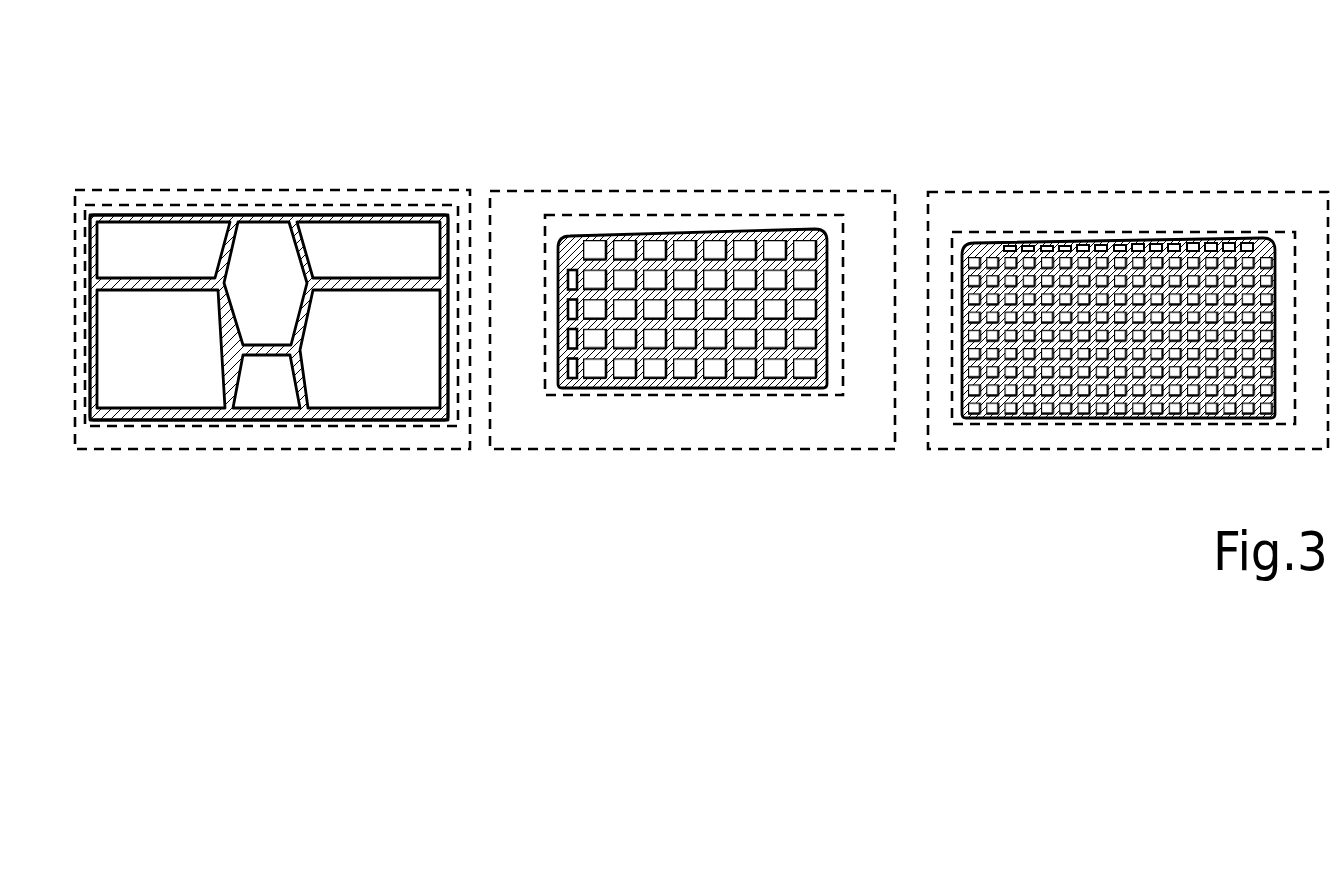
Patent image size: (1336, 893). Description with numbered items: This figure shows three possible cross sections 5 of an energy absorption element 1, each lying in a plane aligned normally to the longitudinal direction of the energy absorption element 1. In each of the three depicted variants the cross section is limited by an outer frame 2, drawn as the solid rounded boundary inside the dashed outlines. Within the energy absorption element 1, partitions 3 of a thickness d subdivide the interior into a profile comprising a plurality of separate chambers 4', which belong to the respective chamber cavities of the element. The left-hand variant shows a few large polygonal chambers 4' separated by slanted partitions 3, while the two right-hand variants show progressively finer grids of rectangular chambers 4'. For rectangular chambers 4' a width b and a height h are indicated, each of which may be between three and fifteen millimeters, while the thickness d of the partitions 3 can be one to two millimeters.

The cross section 5 is at (130, 188).
The energy absorption element 1 is at (178, 208).
The outer frame 2 is at (273, 418).
The partitions 3 is at (238, 248).
The chambers 4' is at (819, 374).
The thickness d is at (393, 278).
The height h is at (745, 347).
The width b is at (754, 366).